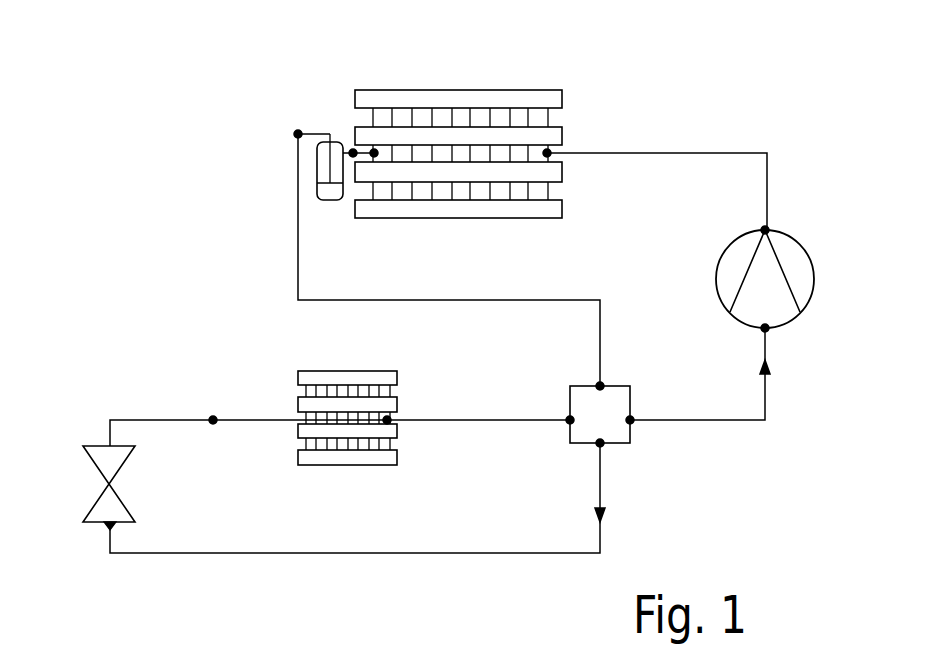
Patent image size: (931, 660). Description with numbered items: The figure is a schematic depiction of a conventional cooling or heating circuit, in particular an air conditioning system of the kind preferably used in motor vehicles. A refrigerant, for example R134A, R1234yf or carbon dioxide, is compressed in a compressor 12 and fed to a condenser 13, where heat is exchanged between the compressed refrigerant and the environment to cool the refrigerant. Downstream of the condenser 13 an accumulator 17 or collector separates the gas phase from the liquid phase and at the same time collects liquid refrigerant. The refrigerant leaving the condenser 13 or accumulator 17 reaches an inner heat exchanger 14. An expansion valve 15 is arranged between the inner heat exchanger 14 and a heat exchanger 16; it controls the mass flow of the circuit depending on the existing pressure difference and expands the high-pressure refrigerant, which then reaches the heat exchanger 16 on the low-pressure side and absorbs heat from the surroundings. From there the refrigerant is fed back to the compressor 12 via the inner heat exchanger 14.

The compressor 12 is at (793, 266).
The condenser 13 is at (598, 87).
The inner heat exchanger 14 is at (643, 449).
The expansion valve 15 is at (86, 543).
The heat exchanger 16 is at (288, 380).
The accumulator 17 is at (331, 132).